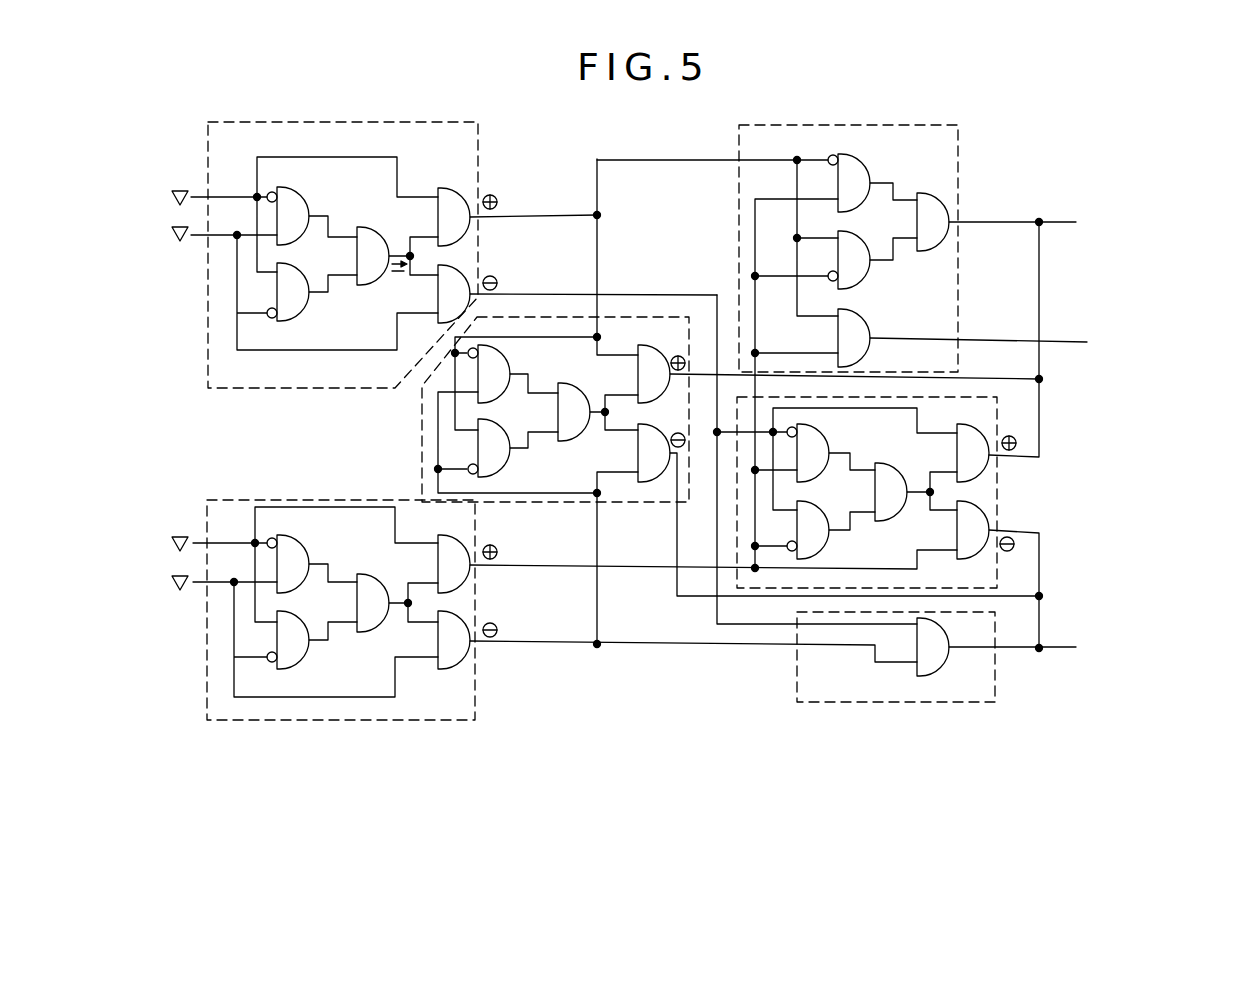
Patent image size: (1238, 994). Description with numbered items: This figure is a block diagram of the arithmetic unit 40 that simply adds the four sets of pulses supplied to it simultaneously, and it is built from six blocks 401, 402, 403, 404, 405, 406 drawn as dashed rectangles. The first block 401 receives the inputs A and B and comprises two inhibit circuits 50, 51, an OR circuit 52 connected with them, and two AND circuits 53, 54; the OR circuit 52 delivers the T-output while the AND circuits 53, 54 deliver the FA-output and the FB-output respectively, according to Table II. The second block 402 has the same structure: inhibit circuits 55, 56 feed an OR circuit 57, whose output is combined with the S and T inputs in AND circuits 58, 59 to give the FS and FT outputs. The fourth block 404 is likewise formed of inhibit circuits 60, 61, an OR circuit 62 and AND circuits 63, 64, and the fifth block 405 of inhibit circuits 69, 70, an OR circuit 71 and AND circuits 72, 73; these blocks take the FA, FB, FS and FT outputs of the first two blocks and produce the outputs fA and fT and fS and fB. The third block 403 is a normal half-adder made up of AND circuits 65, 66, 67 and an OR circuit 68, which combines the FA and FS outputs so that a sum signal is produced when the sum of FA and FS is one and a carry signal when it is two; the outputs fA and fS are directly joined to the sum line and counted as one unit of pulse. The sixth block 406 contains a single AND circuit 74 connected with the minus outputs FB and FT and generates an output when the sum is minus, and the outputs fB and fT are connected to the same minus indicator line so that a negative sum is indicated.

The arithmetic unit 40 is at (696, 126).
The first block 401 is at (468, 160).
The second block 402 is at (412, 512).
The third block 403 is at (947, 172).
The fourth block 404 is at (670, 328).
The fifth block 405 is at (986, 420).
The sixth block 406 is at (797, 677).
The inhibit circuit 50 is at (293, 216).
The inhibit circuit 51 is at (293, 292).
The OR circuit 52 is at (373, 256).
The AND circuit 53 is at (454, 217).
The AND circuit 54 is at (454, 294).
The inhibit circuit 55 is at (293, 564).
The inhibit circuit 56 is at (293, 640).
The OR circuit 57 is at (373, 603).
The AND circuit 58 is at (454, 564).
The AND circuit 59 is at (454, 640).
The inhibit circuit 60 is at (494, 374).
The inhibit circuit 61 is at (494, 448).
The OR circuit 62 is at (574, 412).
The AND circuit 63 is at (654, 374).
The AND circuit 64 is at (654, 453).
The AND circuit 65 is at (854, 183).
The AND circuit 66 is at (854, 260).
The AND circuit 67 is at (854, 338).
The OR circuit 68 is at (933, 222).
The inhibit circuit 69 is at (813, 453).
The inhibit circuit 70 is at (813, 530).
The OR circuit 71 is at (891, 492).
The AND circuit 72 is at (973, 453).
The AND circuit 73 is at (973, 530).
The AND circuit 74 is at (933, 647).